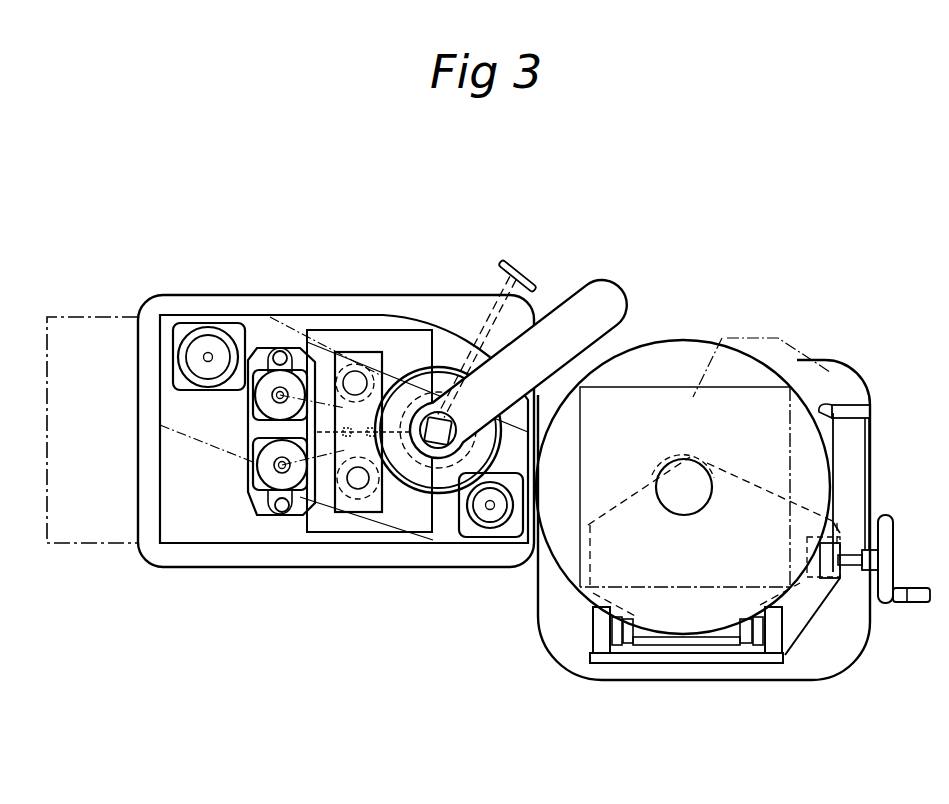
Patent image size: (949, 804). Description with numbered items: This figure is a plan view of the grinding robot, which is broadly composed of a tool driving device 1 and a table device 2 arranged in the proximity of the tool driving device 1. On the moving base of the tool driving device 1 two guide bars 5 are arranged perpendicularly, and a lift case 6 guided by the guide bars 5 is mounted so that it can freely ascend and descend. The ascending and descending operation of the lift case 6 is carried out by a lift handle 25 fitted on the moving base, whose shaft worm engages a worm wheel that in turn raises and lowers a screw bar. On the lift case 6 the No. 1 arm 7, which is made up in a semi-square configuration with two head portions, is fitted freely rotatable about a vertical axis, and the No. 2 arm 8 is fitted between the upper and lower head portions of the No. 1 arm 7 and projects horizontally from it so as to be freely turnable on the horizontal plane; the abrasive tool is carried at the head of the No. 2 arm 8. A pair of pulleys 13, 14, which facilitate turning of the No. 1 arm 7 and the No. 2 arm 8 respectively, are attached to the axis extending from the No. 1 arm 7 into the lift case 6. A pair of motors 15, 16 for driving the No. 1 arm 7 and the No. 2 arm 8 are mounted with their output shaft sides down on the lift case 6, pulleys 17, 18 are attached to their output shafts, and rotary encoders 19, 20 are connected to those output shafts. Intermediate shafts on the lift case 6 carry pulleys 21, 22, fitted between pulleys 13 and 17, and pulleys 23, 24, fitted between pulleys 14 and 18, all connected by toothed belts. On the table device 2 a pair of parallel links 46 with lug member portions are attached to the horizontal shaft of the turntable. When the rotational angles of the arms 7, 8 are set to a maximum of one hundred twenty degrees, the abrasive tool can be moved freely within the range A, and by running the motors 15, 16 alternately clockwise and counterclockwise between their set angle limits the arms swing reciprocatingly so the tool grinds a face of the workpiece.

The tool driving device 1 is at (338, 228).
The table device 2 is at (808, 300).
The guide bar 5 is at (208, 326).
The lift case 6 is at (163, 357).
The No. 1 arm 7 is at (561, 294).
The No. 2 arm 8 is at (673, 363).
The pulley 13 is at (418, 462).
The pulley 14 is at (418, 462).
The motor 15 is at (276, 470).
The motor 16 is at (252, 412).
The pulley 17 is at (253, 473).
The pulley 18 is at (268, 394).
The rotary encoder 19 is at (282, 512).
The rotary encoder 20 is at (280, 350).
The pulley 21 is at (372, 512).
The pulley 22 is at (373, 452).
The pulley 23 is at (375, 355).
The pulley 24 is at (356, 370).
The lift handle 25 is at (516, 262).
The link 46 is at (760, 648).
The range of movement of the abrasive tool A is at (793, 467).